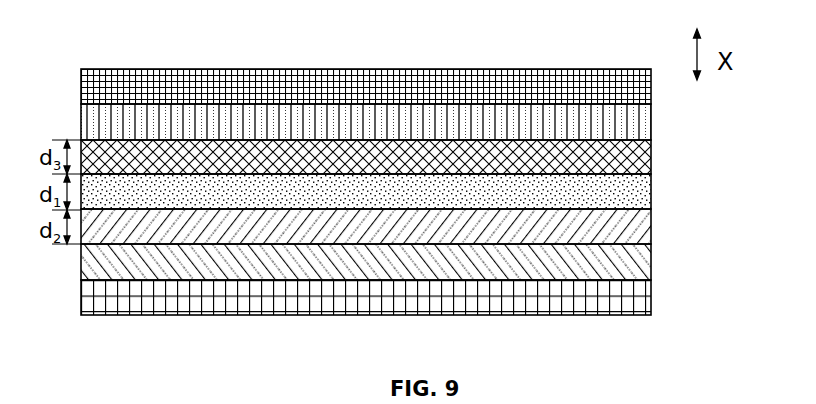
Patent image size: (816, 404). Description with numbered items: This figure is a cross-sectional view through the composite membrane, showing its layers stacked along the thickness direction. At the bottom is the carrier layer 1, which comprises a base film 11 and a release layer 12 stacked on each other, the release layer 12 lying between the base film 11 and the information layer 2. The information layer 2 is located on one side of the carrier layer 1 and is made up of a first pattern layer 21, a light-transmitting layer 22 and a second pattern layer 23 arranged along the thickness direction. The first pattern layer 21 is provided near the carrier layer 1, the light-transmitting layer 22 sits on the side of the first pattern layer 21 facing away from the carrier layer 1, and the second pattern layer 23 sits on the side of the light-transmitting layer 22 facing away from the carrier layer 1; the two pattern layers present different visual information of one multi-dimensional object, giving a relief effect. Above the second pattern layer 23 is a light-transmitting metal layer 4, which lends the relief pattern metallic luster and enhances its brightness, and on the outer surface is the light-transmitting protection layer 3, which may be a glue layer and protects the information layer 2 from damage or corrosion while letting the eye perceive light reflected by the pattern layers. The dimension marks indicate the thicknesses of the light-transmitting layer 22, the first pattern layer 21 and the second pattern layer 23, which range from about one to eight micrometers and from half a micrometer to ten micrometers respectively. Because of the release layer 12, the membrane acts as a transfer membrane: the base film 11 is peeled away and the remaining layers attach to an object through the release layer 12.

The carrier layer 1 is at (420, 294).
The base film 11 is at (622, 293).
The release layer 12 is at (625, 262).
The information layer 2 is at (421, 205).
The first pattern layer 21 is at (404, 240).
The light-transmitting layer 22 is at (635, 195).
The second pattern layer 23 is at (637, 142).
The light-transmitting protection layer 3 is at (638, 87).
The light-transmitting metal layer 4 is at (637, 112).